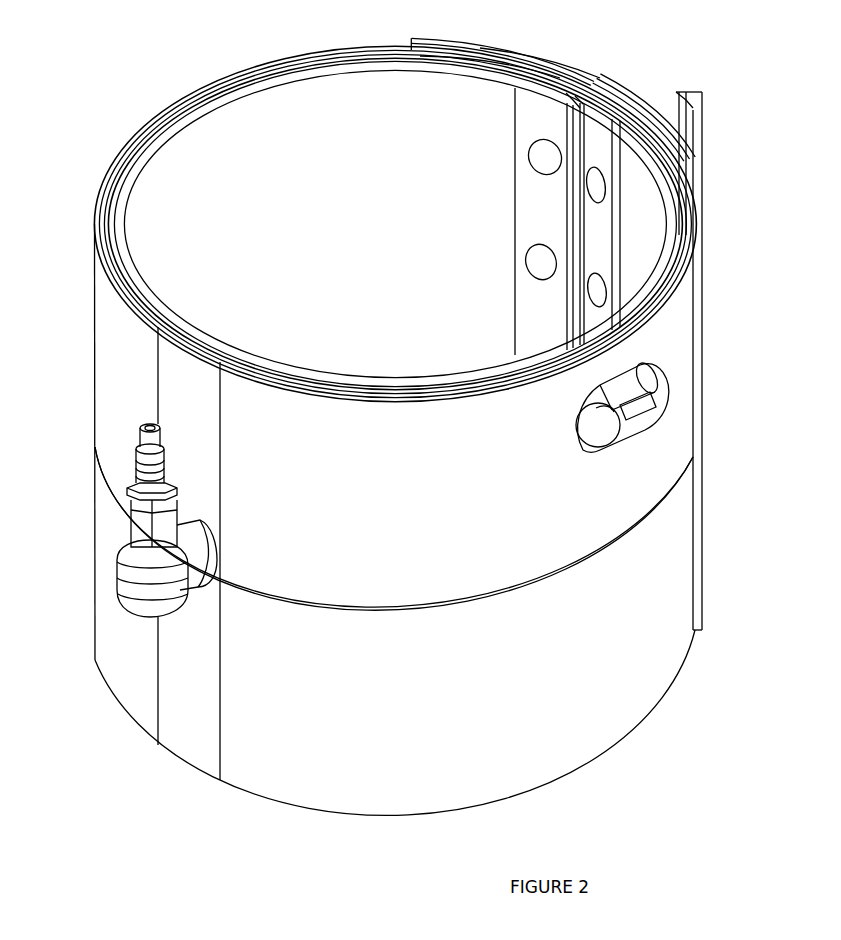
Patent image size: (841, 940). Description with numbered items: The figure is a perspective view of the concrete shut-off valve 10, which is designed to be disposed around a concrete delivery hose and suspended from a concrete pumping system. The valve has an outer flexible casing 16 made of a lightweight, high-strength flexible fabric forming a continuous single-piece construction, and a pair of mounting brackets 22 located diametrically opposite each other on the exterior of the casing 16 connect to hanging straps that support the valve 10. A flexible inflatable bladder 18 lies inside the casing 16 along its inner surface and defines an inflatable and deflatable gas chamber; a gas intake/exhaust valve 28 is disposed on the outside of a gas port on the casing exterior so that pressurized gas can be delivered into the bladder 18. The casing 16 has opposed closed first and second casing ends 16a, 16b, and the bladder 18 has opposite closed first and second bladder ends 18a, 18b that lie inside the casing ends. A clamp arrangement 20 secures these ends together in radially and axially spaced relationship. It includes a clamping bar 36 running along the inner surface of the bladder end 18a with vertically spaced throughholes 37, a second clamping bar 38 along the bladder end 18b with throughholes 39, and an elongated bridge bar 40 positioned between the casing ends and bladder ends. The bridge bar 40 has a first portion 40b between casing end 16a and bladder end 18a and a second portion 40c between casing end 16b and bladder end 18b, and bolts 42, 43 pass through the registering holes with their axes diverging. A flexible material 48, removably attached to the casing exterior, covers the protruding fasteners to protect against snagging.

The concrete shut-off valve 10 is at (408, 416).
The outer flexible casing 16 is at (628, 502).
The first casing end 16a is at (600, 92).
The second casing end 16b is at (605, 102).
The flexible inflatable bladder 18 is at (182, 122).
The first bladder end 18a is at (575, 102).
The second bladder end 18b is at (615, 108).
The clamp arrangement 20 is at (668, 143).
The mounting bracket 22 is at (658, 390).
The gas intake/exhaust valve 28 is at (148, 562).
The clamping bar 36 is at (533, 220).
The throughholes 37 is at (532, 165).
The clamping bar 38 is at (598, 258).
The throughholes 39 is at (600, 202).
The bridge bar 40 is at (593, 90).
The first bridge portion 40b is at (533, 75).
The second bridge portion 40c is at (630, 130).
The bolt 42 is at (537, 152).
The bolt 43 is at (595, 183).
The flexible material 48 is at (630, 67).